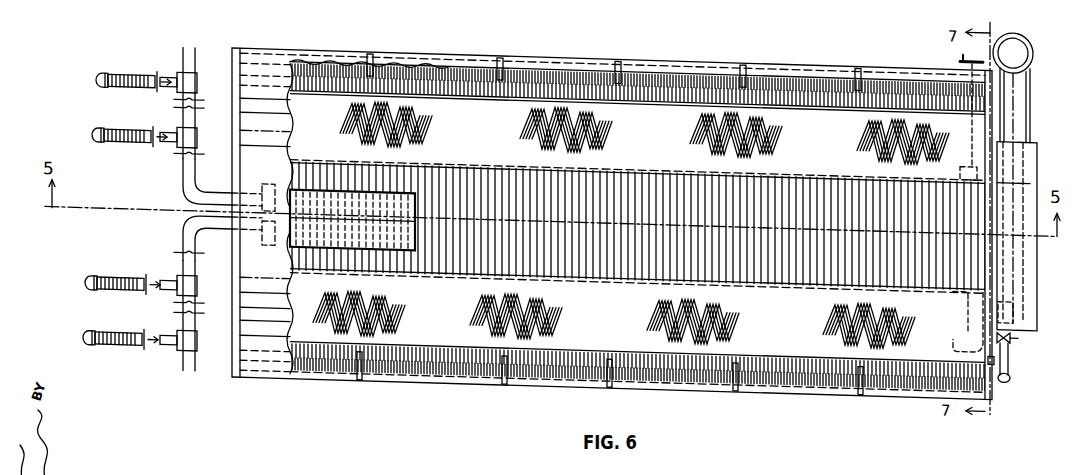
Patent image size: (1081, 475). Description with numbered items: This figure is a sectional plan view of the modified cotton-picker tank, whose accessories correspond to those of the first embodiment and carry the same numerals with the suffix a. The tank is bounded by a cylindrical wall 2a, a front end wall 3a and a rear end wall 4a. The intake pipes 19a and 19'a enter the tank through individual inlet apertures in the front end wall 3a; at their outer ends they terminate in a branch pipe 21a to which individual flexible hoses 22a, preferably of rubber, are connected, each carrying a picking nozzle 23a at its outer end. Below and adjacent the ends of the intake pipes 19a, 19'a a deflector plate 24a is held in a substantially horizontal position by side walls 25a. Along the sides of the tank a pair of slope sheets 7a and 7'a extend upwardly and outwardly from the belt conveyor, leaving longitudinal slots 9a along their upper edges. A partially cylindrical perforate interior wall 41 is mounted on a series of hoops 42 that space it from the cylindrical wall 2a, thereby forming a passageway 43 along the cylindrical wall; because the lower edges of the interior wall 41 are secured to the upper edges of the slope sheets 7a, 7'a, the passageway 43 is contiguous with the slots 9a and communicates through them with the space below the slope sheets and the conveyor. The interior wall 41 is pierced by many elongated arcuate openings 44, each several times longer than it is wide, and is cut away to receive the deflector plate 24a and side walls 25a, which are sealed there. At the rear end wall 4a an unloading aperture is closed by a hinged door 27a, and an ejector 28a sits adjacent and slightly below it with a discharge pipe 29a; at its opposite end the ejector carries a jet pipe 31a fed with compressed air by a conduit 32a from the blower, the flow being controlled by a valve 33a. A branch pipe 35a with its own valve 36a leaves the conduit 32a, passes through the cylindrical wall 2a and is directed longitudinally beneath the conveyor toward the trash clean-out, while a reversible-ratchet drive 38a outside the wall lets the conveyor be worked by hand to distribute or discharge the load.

The cylindrical wall 2a is at (748, 49).
The front end wall 3a is at (241, 55).
The rear end wall 4a is at (998, 102).
The slope sheet 7a is at (677, 99).
The slope sheet 7'a is at (614, 355).
The longitudinal slot 9a is at (567, 62).
The intake pipe 19a is at (208, 196).
The intake pipe 19'a is at (229, 240).
The branch pipe 21a is at (181, 78).
The flexible hose 22a is at (125, 73).
The picking nozzle 23a is at (104, 74).
The deflector plate 24a is at (307, 188).
The side wall 25a is at (370, 268).
The hinged door 27a is at (998, 232).
The ejector 28a is at (1037, 248).
The discharge pipe 29a is at (1034, 29).
The jet pipe 31a is at (1014, 289).
The conduit 32a is at (1012, 355).
The valve 33a is at (1012, 317).
The branch pipe 35a is at (957, 302).
The valve 36a is at (992, 342).
The reversible-ratchet drive 38a is at (960, 148).
The perforate interior wall 41 is at (534, 61).
The hoop 42 is at (500, 52).
The passageway 43 is at (502, 376).
The elongated arcuate opening 44 is at (637, 60).